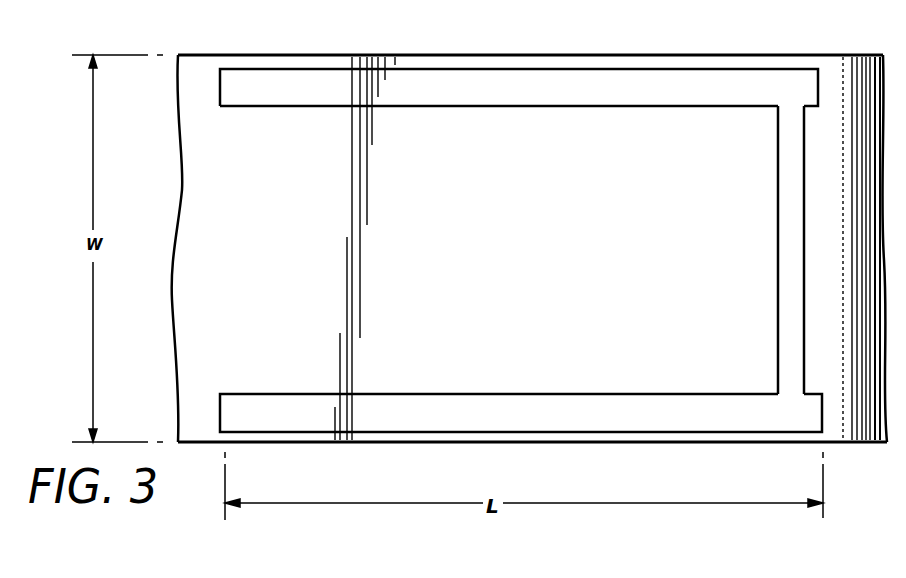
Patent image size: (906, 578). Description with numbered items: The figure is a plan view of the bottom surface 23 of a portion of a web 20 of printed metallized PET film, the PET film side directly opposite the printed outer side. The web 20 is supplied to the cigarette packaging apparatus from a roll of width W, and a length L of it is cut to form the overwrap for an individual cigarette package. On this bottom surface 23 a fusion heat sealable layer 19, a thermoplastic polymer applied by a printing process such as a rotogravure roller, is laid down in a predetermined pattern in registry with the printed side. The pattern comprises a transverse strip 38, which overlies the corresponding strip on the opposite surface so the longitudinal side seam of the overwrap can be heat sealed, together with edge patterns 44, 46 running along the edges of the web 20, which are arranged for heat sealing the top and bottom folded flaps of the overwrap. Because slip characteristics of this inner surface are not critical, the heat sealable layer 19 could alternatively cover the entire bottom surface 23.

The fusion heat sealable layer 19 is at (331, 59).
The web 20 is at (648, 51).
The bottom surface 23 is at (513, 232).
The transverse strip 38 is at (791, 228).
The edge pattern 44 is at (490, 88).
The edge pattern 46 is at (467, 418).